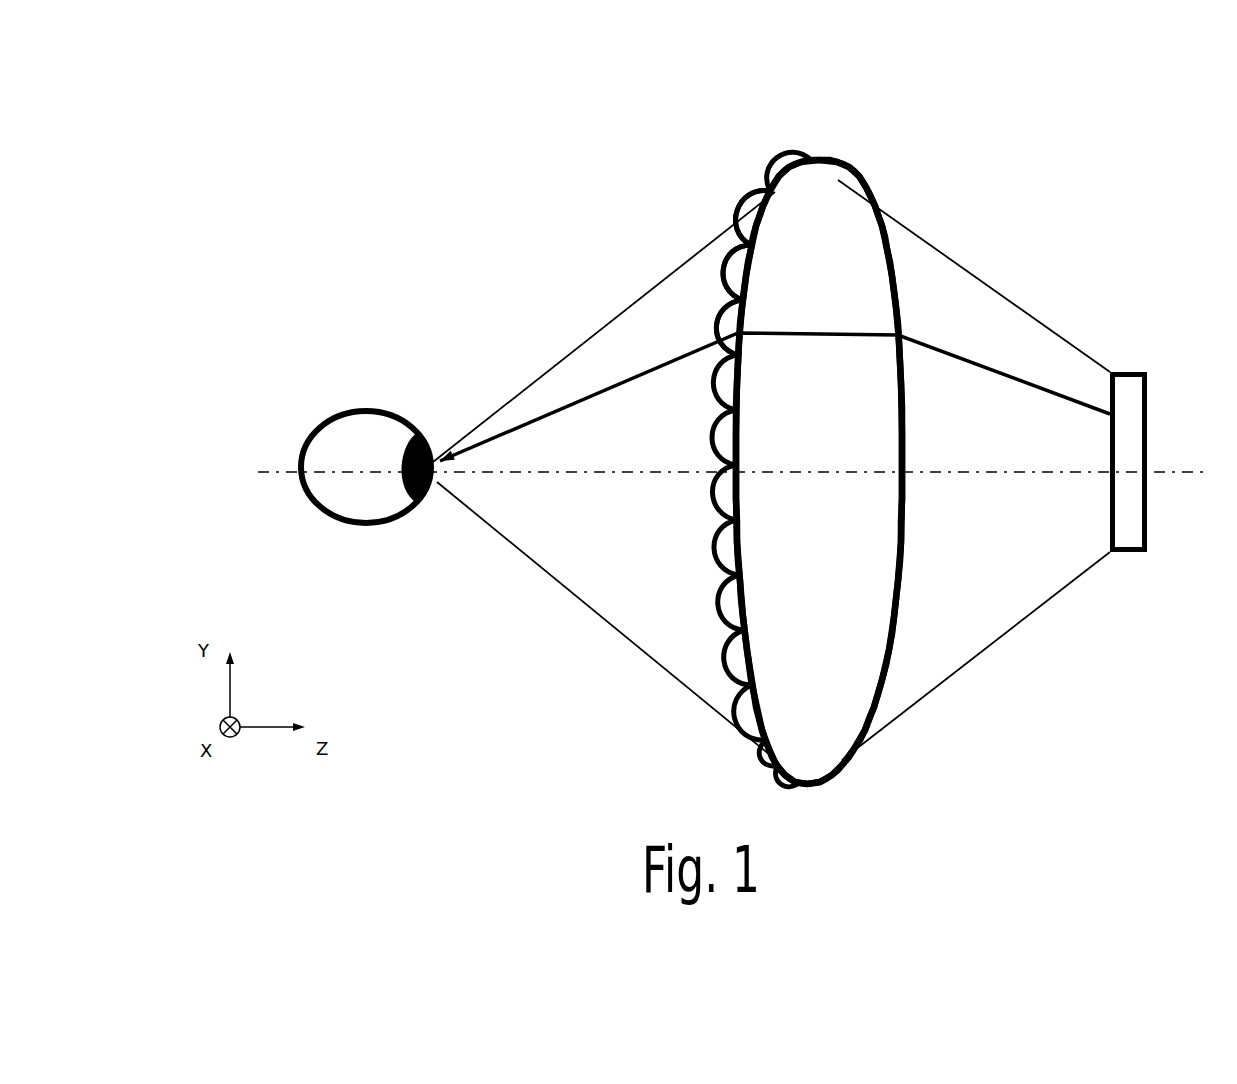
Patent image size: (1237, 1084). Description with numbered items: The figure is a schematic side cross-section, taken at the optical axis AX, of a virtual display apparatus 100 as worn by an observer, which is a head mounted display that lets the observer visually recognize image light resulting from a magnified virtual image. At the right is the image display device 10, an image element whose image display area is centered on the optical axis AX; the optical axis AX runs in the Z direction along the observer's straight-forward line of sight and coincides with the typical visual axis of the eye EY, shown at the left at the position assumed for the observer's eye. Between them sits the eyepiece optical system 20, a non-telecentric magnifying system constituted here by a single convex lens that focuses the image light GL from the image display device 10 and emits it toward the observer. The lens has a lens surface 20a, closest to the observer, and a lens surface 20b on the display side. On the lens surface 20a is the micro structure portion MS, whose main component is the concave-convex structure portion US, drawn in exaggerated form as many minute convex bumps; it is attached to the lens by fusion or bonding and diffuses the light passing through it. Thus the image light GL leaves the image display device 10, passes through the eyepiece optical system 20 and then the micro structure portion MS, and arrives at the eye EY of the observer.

The virtual display apparatus 100 is at (1025, 180).
The image display device 10 is at (1127, 343).
The eyepiece optical system 20 is at (843, 224).
The lens surface 20a is at (740, 296).
The lens surface 20b is at (897, 313).
The micro structure portion MS is at (664, 176).
The concave-convex structure portion US is at (747, 213).
The image light GL is at (613, 383).
The eye EY is at (347, 502).
The optical axis AX is at (1165, 462).